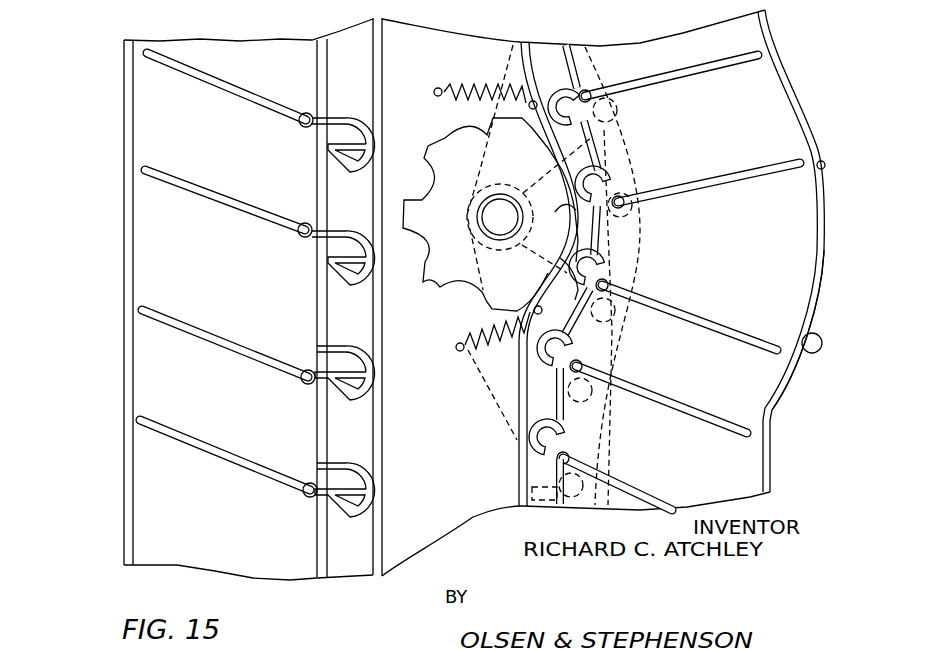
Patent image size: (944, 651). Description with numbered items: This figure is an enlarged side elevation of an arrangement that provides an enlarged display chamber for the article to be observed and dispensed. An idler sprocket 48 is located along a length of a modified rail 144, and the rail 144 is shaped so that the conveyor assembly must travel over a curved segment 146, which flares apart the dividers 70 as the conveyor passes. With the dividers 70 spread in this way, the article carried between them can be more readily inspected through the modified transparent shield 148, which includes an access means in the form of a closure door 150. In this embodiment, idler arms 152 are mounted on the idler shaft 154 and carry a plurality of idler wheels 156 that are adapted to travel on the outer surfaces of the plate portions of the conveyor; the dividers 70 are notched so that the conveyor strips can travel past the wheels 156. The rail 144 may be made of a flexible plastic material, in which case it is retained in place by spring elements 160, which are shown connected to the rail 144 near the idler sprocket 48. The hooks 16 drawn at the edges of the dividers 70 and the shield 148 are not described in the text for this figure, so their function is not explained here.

The modified transparent shield 148 is at (122, 488).
The closure door 150 is at (813, 262).
The modified rail 144 is at (519, 398).
The dividers 70 is at (205, 447).
The hook 16 is at (574, 127).
The idler sprocket 48 is at (447, 288).
The idler shaft 154 is at (488, 217).
The curved segment 146 is at (575, 207).
The idler arms 152 is at (510, 77).
The spring elements 160 is at (466, 111).
The idler wheels 156 is at (617, 323).